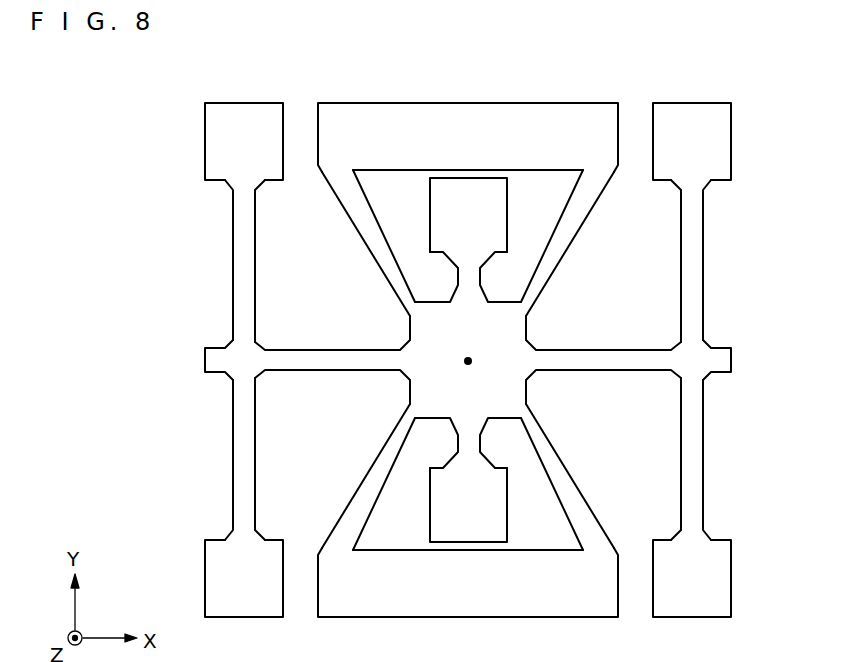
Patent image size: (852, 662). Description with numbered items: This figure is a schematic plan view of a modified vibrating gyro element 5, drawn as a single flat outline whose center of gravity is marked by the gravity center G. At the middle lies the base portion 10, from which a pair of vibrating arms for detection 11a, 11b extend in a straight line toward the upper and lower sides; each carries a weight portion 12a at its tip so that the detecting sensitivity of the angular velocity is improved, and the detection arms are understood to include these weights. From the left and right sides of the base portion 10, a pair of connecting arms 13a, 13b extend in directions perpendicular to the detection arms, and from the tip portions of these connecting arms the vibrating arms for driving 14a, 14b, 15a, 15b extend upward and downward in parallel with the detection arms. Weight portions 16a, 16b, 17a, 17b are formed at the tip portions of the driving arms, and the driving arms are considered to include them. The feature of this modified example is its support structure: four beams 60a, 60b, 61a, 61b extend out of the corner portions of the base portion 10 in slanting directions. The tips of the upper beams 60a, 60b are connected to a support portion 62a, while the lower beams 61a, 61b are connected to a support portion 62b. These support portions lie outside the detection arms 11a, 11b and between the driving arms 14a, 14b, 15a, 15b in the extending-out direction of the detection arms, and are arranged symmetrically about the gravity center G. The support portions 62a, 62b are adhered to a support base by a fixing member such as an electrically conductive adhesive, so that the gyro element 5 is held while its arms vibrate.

The vibrating gyro element 5 is at (767, 102).
The base portion 10 is at (513, 372).
The vibrating arm for detection 11a is at (466, 278).
The vibrating arm for detection 11b is at (472, 438).
The weight portion 12a is at (491, 197).
The connecting arm 13a is at (340, 362).
The connecting arm 13b is at (589, 362).
The vibrating arm for driving 14a is at (242, 262).
The vibrating arm for driving 14b is at (242, 454).
The vibrating arm for driving 15a is at (694, 262).
The vibrating arm for driving 15b is at (694, 454).
The weight portion 16a is at (205, 139).
The weight portion 16b is at (205, 584).
The weight portion 17a is at (731, 139).
The weight portion 17b is at (726, 578).
The beam 60a is at (367, 231).
The beam 60b is at (569, 231).
The beam 61a is at (370, 487).
The beam 61b is at (562, 487).
The support portion 62a is at (467, 113).
The support portion 62b is at (467, 607).
The gravity center G is at (467, 347).